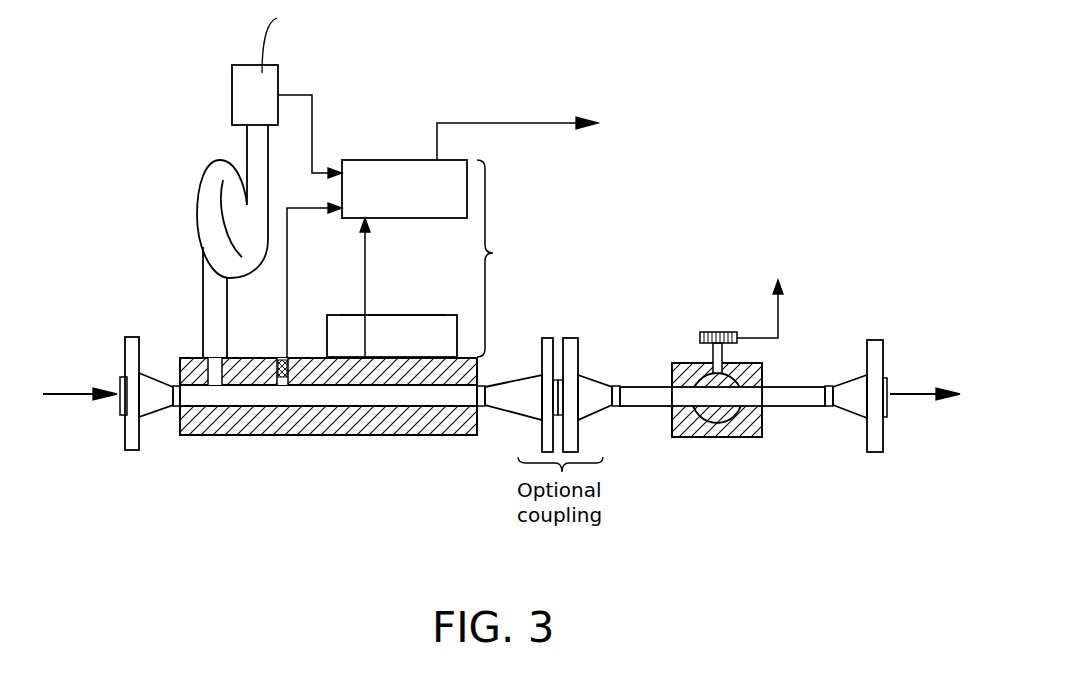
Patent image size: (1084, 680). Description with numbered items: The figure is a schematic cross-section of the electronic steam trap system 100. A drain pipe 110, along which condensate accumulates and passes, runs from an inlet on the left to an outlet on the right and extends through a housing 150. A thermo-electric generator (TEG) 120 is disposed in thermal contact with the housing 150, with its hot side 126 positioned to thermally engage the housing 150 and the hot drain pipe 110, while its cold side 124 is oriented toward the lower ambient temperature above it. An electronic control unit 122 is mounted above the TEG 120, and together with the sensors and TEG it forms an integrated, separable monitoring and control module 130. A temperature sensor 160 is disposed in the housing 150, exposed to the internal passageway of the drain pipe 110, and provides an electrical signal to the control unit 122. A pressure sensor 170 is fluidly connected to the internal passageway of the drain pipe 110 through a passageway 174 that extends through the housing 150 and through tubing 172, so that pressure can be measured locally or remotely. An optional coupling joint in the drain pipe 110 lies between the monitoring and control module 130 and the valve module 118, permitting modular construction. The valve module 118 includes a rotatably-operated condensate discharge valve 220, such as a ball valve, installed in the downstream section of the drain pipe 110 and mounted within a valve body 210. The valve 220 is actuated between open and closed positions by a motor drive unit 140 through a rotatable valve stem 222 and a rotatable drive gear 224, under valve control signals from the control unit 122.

The steam trap system 100 is at (507, 53).
The drain pipe 110 is at (327, 398).
The valve module 118 is at (741, 399).
The thermo-electric generator (TEG) 120 is at (343, 323).
The electronic control unit 122 is at (387, 160).
The cold side 124 is at (390, 343).
The hot side 126 is at (390, 376).
The monitoring and control module 130 is at (506, 258).
The motor drive unit 140 is at (781, 253).
The housing 150 is at (227, 435).
The temperature sensor 160 is at (272, 350).
The pressure sensor 170 is at (243, 93).
The tubing 172 is at (250, 155).
The passageway 174 is at (190, 358).
The valve body 210 is at (745, 437).
The condensate discharge valve 220 is at (715, 437).
The valve stem 222 is at (713, 350).
The drive gear 224 is at (716, 332).